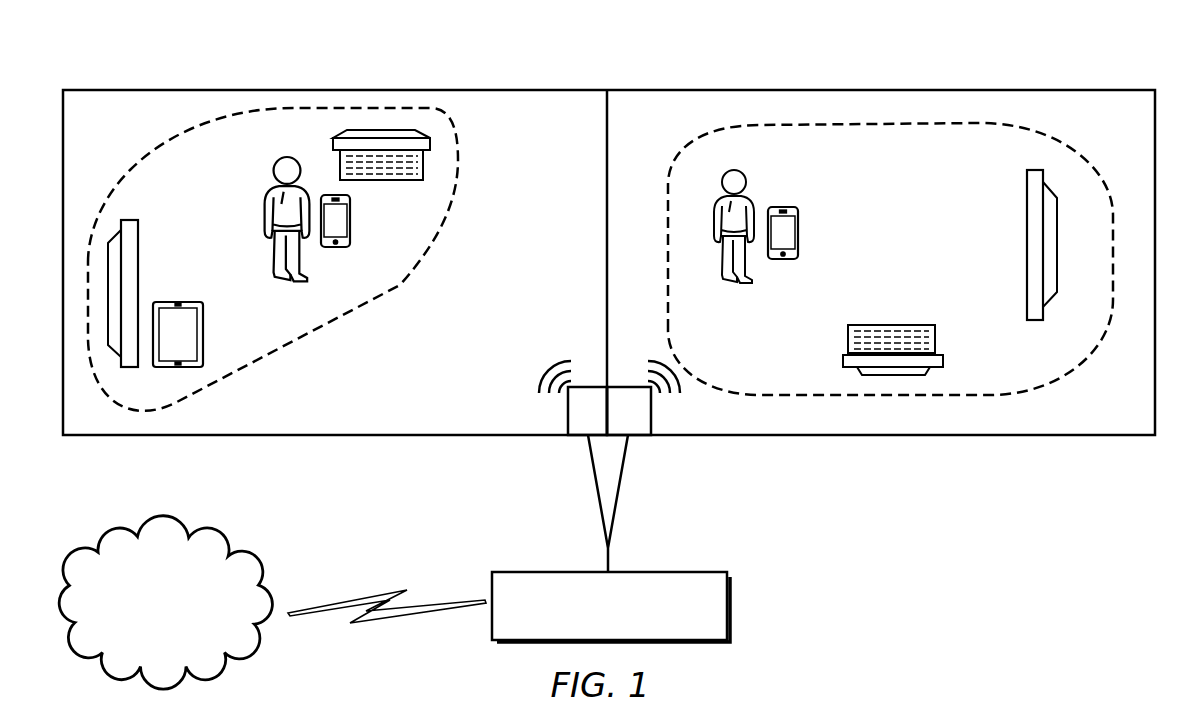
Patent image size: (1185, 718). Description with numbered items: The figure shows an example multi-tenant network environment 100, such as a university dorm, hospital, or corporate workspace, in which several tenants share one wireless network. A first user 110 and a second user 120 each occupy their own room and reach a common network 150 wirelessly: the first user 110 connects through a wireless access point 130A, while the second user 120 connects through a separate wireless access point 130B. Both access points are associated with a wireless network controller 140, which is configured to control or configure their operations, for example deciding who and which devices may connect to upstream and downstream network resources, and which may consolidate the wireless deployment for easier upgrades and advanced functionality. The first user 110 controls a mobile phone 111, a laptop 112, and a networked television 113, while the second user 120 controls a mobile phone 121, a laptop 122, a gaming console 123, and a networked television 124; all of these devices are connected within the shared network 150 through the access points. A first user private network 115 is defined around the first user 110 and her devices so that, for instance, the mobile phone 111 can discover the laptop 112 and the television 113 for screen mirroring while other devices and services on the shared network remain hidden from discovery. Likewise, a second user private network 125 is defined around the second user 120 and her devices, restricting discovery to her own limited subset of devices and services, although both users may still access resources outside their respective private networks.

The network environment 100 is at (858, 38).
The first user 110 is at (748, 195).
The mobile phone 111 is at (798, 226).
The laptop 112 is at (848, 340).
The networked television 113 is at (1027, 232).
The first user private network 115 is at (1052, 378).
The second user 120 is at (263, 200).
The mobile phone 121 is at (350, 218).
The laptop 122 is at (423, 158).
The gaming console 123 is at (203, 330).
The networked television 124 is at (138, 258).
The second user private network 125 is at (337, 322).
The wireless access point 130A is at (651, 410).
The wireless access point 130B is at (568, 410).
The wireless network controller 140 is at (727, 602).
The network 150 is at (165, 602).